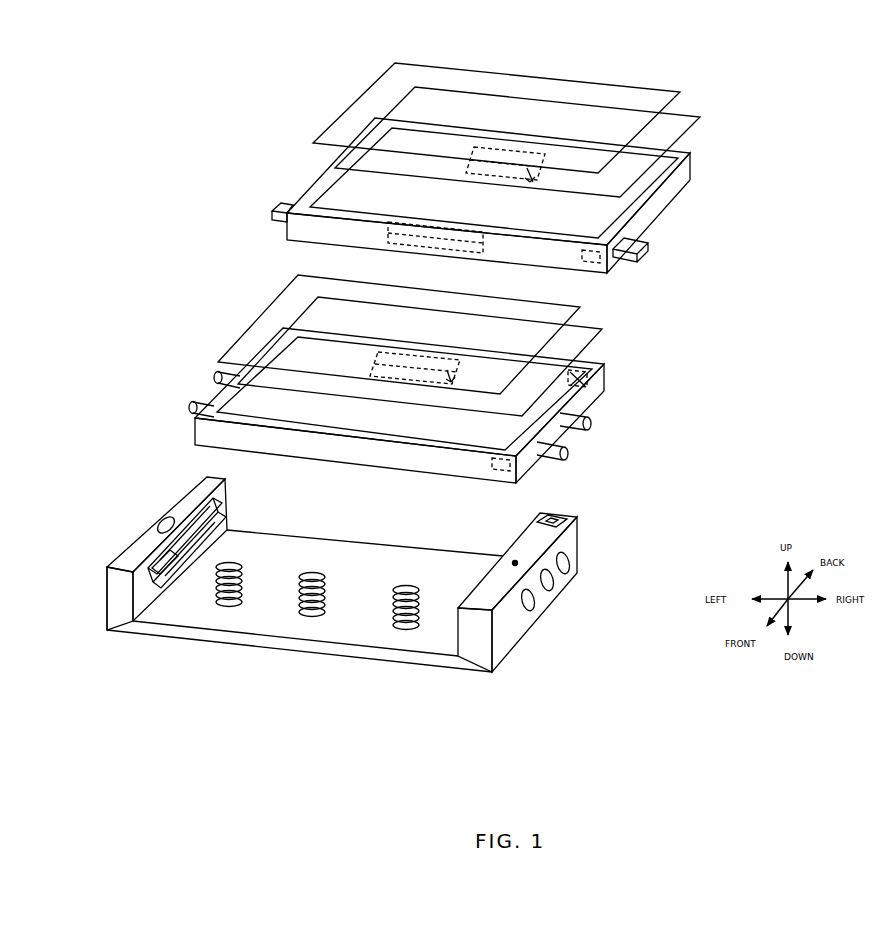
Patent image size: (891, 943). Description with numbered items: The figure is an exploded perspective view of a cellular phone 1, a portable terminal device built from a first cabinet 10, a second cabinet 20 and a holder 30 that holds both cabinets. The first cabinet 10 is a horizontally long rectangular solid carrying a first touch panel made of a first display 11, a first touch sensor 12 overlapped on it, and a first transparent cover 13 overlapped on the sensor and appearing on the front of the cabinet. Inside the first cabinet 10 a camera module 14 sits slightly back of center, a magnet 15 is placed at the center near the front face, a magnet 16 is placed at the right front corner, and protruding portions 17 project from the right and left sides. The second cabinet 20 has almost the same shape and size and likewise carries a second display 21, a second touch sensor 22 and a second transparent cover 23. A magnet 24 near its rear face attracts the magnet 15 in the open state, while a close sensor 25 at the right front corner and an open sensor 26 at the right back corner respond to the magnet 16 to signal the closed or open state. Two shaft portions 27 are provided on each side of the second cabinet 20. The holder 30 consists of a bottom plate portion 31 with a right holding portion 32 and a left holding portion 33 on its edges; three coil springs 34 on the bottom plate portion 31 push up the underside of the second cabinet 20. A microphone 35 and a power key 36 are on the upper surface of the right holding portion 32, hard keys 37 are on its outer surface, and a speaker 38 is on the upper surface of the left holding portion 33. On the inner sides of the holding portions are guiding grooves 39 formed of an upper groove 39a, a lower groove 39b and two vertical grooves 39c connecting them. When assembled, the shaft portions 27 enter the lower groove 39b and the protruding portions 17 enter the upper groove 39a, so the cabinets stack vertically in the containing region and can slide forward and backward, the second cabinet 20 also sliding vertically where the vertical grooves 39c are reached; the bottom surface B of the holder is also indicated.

The cellular phone 1 is at (262, 96).
The first cabinet 10 is at (691, 168).
The first display 11 is at (337, 187).
The first touch sensor 12 is at (694, 110).
The first transparent cover 13 is at (616, 83).
The camera module 14 is at (507, 130).
The magnet 15 is at (474, 252).
The magnet 16 is at (601, 262).
The protruding portions 17 is at (270, 208).
The second cabinet 20 is at (677, 371).
The second display 21 is at (196, 425).
The second touch sensor 22 is at (606, 329).
The second transparent cover 23 is at (276, 302).
The magnet 24 is at (413, 383).
The close sensor 25 is at (511, 468).
The open sensor 26 is at (600, 393).
The shaft portions 27 is at (218, 377).
The holder 30 is at (470, 685).
The bottom plate portion 31 is at (384, 662).
The right holding portion 32 is at (503, 637).
The left holding portion 33 is at (107, 602).
The coil springs 34 is at (405, 588).
The microphone 35 is at (517, 562).
The power key 36 is at (562, 520).
The hard keys 37 is at (573, 575).
The speaker 38 is at (160, 519).
The guiding grooves 39 is at (218, 512).
The upper groove 39a is at (190, 520).
The lower groove 39b is at (230, 535).
The vertical grooves 39c is at (160, 588).
The bottom surface B is at (423, 572).